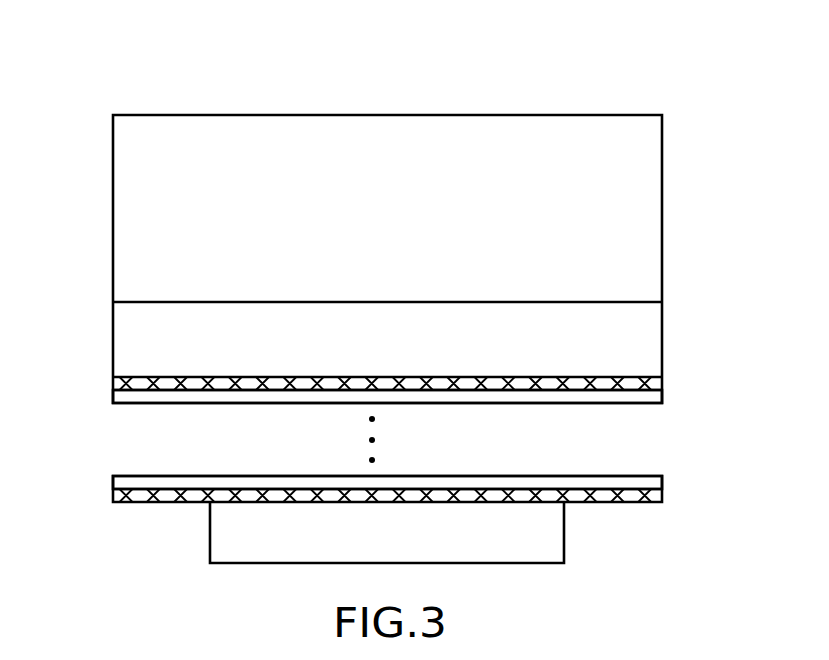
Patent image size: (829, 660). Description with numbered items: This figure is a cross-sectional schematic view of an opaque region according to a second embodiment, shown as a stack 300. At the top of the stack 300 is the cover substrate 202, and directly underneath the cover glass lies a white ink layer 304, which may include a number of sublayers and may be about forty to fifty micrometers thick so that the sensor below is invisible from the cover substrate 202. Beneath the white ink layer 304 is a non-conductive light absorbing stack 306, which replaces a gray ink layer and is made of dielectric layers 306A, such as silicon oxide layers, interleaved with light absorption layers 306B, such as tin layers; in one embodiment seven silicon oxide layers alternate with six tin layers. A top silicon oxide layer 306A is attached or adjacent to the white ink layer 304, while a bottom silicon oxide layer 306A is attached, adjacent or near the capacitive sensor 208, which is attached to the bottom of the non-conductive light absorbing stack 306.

The stack 300 is at (83, 88).
The cover substrate 202 is at (406, 228).
The white ink layer 304 is at (404, 348).
The non-conductive light absorbing stack 306 is at (102, 376).
The dielectric layer 306A is at (662, 378).
The light absorption layer 306B is at (662, 397).
The capacitive sensor 208 is at (406, 557).